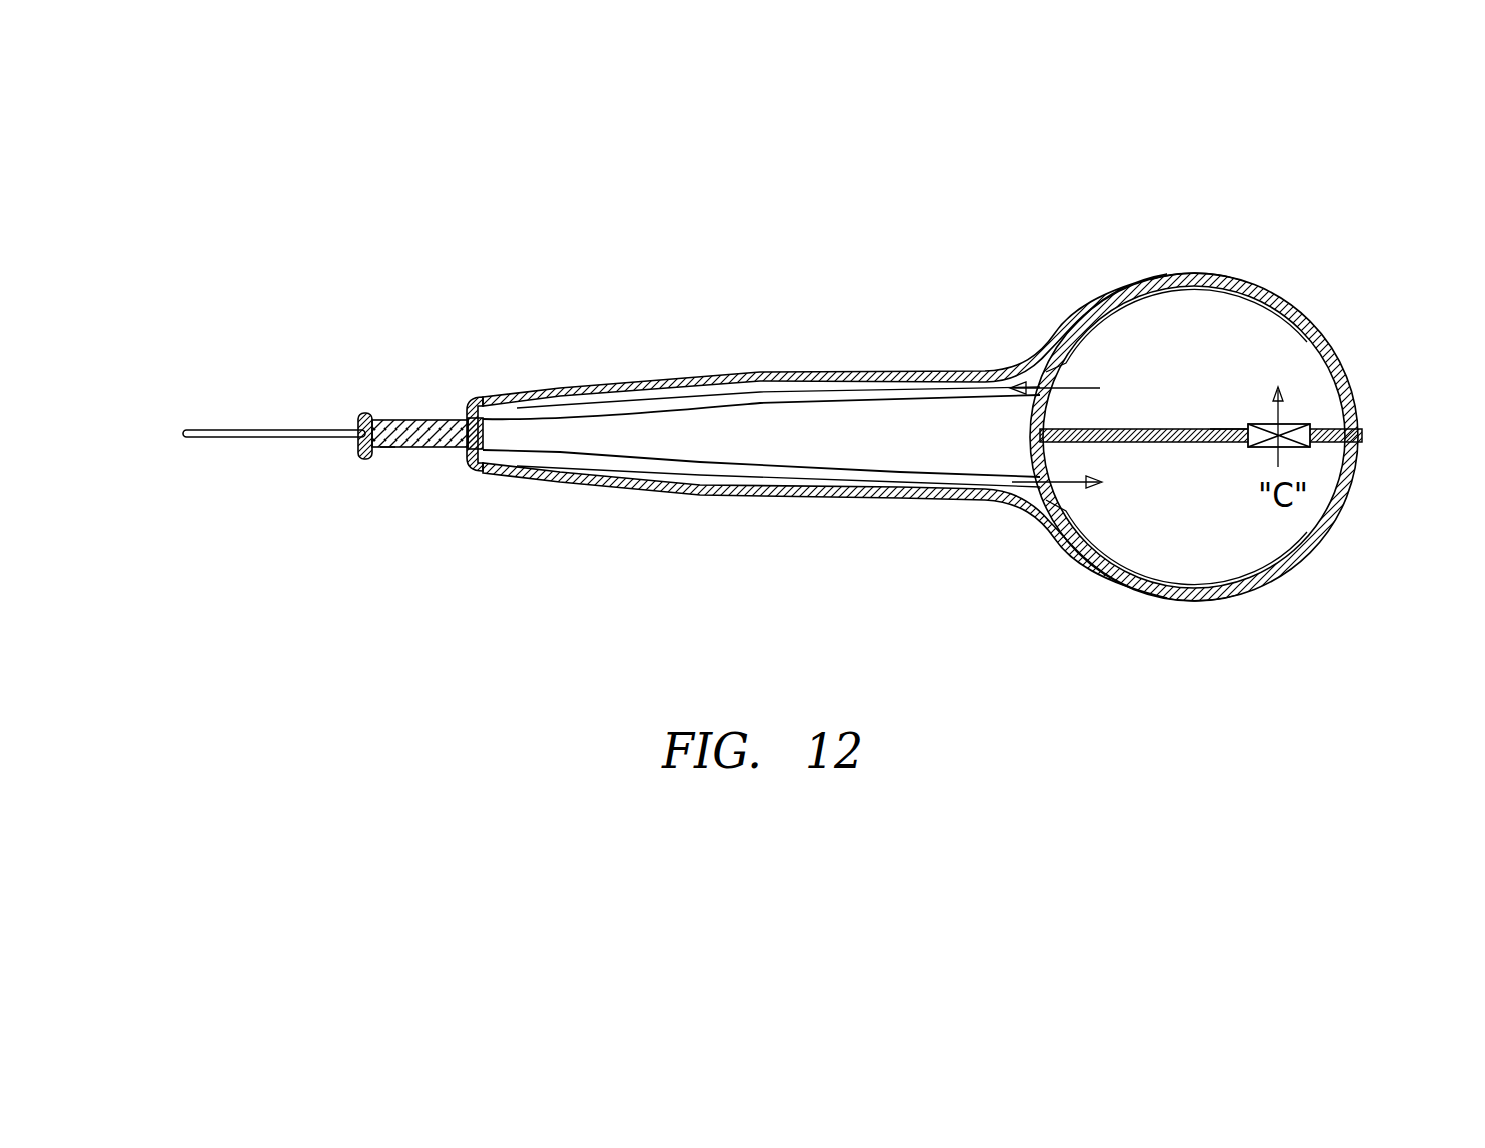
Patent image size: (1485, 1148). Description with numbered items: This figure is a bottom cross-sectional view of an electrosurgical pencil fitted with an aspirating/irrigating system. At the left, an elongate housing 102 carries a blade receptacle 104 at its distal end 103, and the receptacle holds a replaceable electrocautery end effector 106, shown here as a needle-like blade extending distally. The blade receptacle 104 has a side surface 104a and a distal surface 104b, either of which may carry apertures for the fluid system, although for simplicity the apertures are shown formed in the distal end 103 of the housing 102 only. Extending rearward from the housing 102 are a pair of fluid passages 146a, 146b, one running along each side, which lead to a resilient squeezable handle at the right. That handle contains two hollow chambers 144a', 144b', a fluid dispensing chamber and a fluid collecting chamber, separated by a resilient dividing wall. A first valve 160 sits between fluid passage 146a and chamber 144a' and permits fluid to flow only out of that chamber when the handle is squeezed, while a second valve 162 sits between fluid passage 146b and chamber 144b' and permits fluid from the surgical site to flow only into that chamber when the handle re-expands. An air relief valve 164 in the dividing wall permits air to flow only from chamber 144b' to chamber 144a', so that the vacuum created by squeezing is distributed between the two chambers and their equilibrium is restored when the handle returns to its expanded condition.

The elongate housing 102 is at (657, 379).
The distal end 103 is at (452, 452).
The blade receptacle 104 is at (398, 419).
The side surface 104a is at (391, 449).
The distal surface 104b is at (360, 448).
The electrocautery end effector 106 is at (236, 429).
The hollow chamber 144a' is at (1195, 258).
The hollow chamber 144b' is at (1232, 610).
The fluid passage 146a is at (720, 398).
The fluid passage 146b is at (735, 480).
The first valve 160 is at (1058, 380).
The second valve 162 is at (1058, 492).
The air relief valve 164 is at (1307, 423).